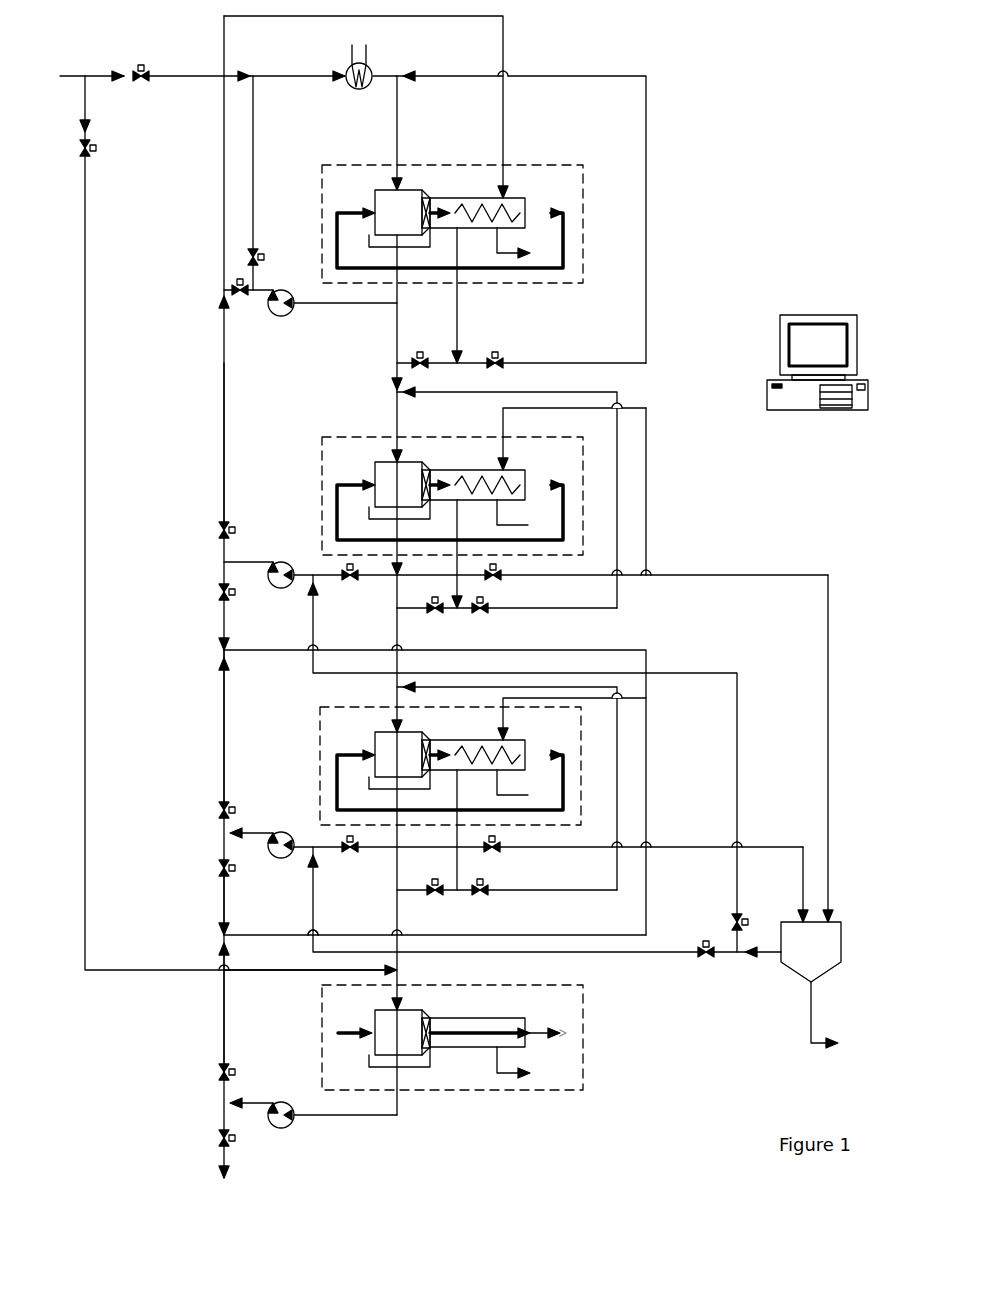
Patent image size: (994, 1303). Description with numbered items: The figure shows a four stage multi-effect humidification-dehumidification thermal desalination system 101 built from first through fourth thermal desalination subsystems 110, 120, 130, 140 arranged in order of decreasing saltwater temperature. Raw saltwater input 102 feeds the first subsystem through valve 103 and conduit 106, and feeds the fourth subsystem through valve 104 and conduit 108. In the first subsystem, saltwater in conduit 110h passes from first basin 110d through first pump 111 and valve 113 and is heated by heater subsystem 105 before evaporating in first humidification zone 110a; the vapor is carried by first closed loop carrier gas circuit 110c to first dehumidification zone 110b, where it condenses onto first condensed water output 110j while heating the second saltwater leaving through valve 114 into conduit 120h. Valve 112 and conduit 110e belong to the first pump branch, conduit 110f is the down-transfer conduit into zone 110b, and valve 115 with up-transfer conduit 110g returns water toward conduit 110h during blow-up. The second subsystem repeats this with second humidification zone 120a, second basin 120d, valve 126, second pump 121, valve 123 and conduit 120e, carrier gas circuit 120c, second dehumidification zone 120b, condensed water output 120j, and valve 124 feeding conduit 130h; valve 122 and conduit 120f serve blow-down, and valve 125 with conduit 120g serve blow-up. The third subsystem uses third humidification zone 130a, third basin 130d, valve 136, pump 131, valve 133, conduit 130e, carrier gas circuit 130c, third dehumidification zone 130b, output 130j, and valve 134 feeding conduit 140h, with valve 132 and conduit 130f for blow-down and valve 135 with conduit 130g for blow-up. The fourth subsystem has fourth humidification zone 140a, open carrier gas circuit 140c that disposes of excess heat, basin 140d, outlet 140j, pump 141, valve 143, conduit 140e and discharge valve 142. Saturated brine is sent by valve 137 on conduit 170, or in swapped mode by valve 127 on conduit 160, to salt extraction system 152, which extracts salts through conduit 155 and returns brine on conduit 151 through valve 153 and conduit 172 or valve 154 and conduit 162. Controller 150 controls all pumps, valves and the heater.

The multi-effect HDH thermal desalination system 101 is at (742, 212).
The raw saltwater input 102 is at (74, 76).
The valve 103 is at (150, 80).
The valve 104 is at (96, 144).
The heater subsystem 105 is at (323, 56).
The conduit 106 is at (162, 64).
The conduit 108 is at (86, 298).
The first thermal desalination subsystem 110 is at (584, 228).
The first humidification zone 110a is at (376, 191).
The first dehumidification zone 110b is at (507, 203).
The first closed loop carrier gas circuit 110c is at (430, 200).
The first basin 110d is at (368, 248).
The conduit 110e is at (253, 203).
The conduit 110f is at (505, 42).
The conduit 110g is at (647, 82).
The conduit 110h is at (397, 135).
The first condensed water output 110j is at (498, 257).
The first pump 111 is at (287, 315).
The valve 112 is at (245, 297).
The valve 113 is at (257, 250).
The valve 114 is at (420, 348).
The valve 115 is at (503, 358).
The second thermal desalination subsystem 120 is at (583, 480).
The second humidification zone 120a is at (376, 466).
The second dehumidification zone 120b is at (505, 477).
The second closed loop carrier gas circuit 120c is at (427, 472).
The second basin 120d is at (369, 519).
The conduit 120e is at (224, 423).
The conduit 120f is at (224, 643).
The conduit 120g is at (625, 420).
The conduit 120h is at (397, 405).
The condensed water output 120j is at (518, 530).
The second pump 121 is at (272, 588).
The valve 122 is at (219, 592).
The valve 123 is at (219, 530).
The valve 124 is at (441, 613).
The valve 125 is at (486, 612).
The valve 126 is at (353, 583).
The valve 127 is at (500, 578).
The third thermal desalination subsystem 130 is at (582, 760).
The third humidification zone 130a is at (368, 740).
The third dehumidification zone 130b is at (505, 745).
The third closed loop carrier gas circuit 130c is at (428, 772).
The third basin 130d is at (369, 789).
The conduit 130e is at (224, 718).
The conduit 130f is at (224, 903).
The conduit 130g is at (646, 800).
The conduit 130h is at (397, 702).
The condensed water output 130j is at (520, 800).
The pump 131 is at (277, 860).
The valve 132 is at (220, 870).
The valve 133 is at (220, 810).
The valve 134 is at (437, 894).
The valve 135 is at (485, 893).
The valve 136 is at (352, 855).
The valve 137 is at (500, 849).
The fourth thermal desalination subsystem 140 is at (583, 1048).
The fourth humidification zone 140a is at (368, 1032).
The open carrier gas circuit 140c is at (473, 1035).
The basin 140d is at (369, 1065).
The conduit 140e is at (224, 1005).
The conduit 140h is at (397, 980).
The outlet 140j is at (518, 1075).
The pump 141 is at (273, 1127).
The discharge valve 142 is at (221, 1132).
The valve 143 is at (219, 1078).
The controller 150 is at (813, 305).
The conduit 151 is at (760, 958).
The salt extraction system 152 is at (835, 975).
The valve 153 is at (706, 957).
The valve 154 is at (731, 925).
The conduit 155 is at (843, 1017).
The conduit 160 is at (830, 830).
The conduit 162 is at (737, 710).
The conduit 170 is at (806, 863).
The conduit 172 is at (622, 954).